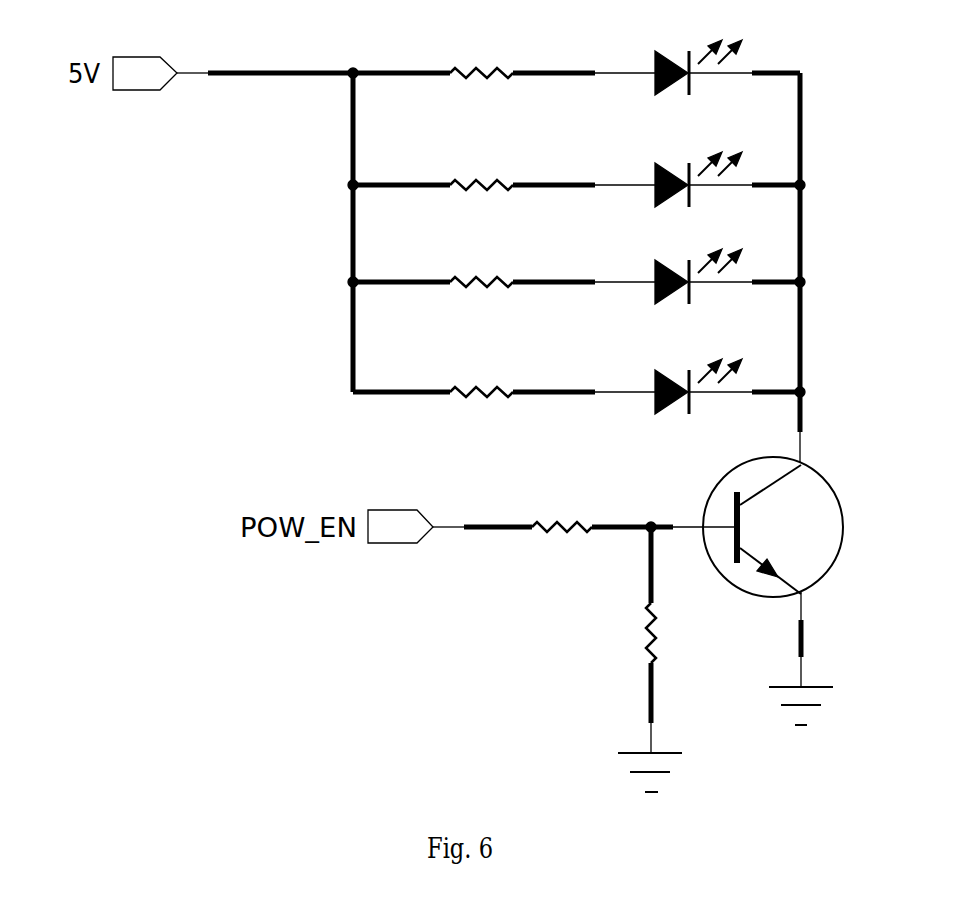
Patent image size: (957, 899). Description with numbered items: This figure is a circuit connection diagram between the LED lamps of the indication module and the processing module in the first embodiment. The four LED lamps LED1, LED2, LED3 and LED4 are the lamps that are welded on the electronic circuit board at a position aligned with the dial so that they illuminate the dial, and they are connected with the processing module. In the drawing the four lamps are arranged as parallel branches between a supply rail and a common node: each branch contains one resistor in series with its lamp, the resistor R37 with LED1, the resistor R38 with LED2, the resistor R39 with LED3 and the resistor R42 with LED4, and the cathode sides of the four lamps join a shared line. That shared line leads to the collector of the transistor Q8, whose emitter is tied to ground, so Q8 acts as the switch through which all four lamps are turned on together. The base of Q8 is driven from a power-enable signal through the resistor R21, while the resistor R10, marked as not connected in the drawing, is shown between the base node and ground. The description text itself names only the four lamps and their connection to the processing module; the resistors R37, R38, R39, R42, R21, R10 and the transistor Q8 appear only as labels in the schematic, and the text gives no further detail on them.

The resistor 510R for LED1 R37 is at (474, 48).
The resistor 510R for LED2 R38 is at (474, 160).
The resistor 510R for LED3 R39 is at (474, 257).
The resistor 510R for LED4 R42 is at (474, 367).
The LED lamp LED1 is at (697, 58).
The LED lamp LED2 is at (697, 170).
The LED lamp LED3 is at (697, 267).
The LED lamp LED4 is at (697, 377).
The base resistor 10K R21 is at (602, 528).
The resistor NC (not connected) R10 is at (634, 659).
The NPN transistor S8050 Q8 is at (773, 579).